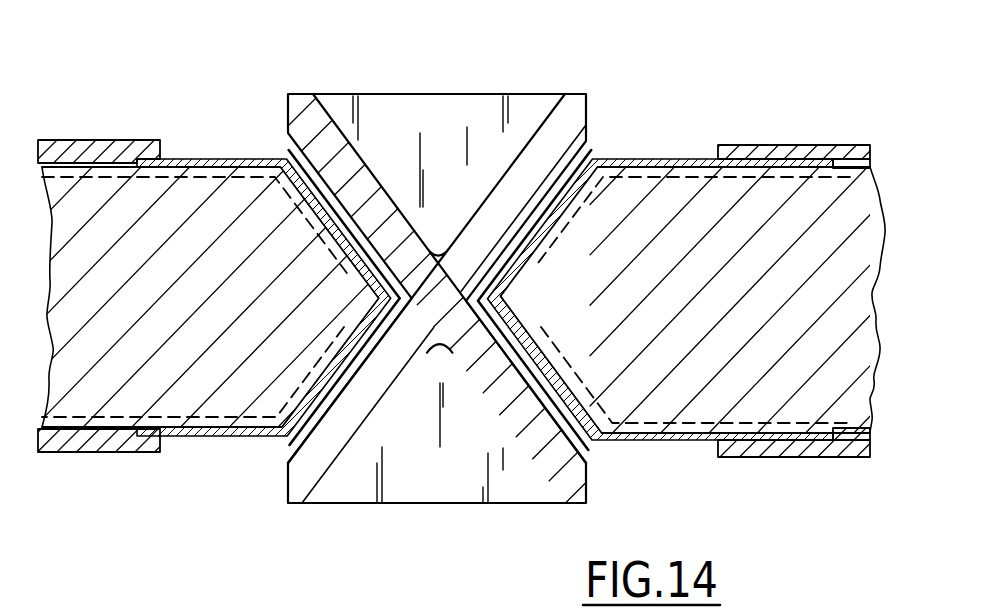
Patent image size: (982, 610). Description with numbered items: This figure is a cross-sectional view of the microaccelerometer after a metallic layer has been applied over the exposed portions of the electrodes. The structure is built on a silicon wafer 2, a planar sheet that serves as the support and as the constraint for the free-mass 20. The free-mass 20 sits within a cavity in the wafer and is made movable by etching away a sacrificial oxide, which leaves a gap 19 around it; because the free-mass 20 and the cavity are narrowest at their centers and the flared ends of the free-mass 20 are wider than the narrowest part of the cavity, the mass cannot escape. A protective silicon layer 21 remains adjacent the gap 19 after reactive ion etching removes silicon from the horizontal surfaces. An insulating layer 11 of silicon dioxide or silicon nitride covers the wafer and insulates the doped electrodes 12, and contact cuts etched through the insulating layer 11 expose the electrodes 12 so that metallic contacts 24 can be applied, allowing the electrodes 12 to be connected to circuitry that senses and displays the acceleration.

The silicon wafer 2 is at (863, 294).
The insulating layer 11 is at (698, 160).
The electrodes 12 is at (655, 173).
The gap 19 is at (289, 152).
The free-mass 20 is at (423, 96).
The protective silicon layer 21 is at (590, 158).
The metallic contacts 24 is at (768, 146).